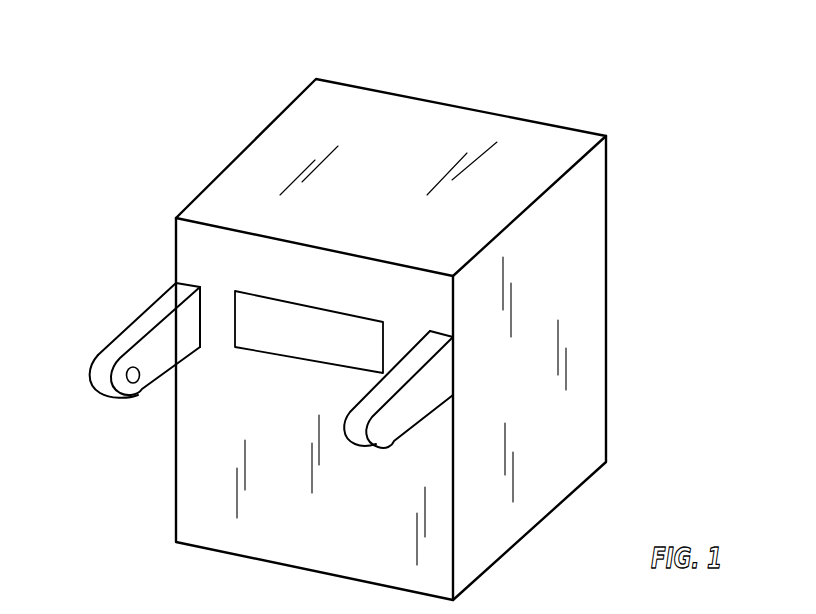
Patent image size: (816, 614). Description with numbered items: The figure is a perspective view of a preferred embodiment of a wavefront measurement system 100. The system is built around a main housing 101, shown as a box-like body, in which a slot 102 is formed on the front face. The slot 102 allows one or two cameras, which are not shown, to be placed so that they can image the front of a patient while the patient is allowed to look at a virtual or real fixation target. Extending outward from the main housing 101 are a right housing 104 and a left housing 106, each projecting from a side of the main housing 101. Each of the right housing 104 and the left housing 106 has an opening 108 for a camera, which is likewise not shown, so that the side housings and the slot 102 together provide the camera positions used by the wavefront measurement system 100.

The wavefront measurement system 100 is at (614, 60).
The main housing 101 is at (587, 302).
The slot 102 is at (295, 349).
The right housing 104 is at (388, 450).
The left housing 106 is at (97, 357).
The opening 108 is at (136, 384).